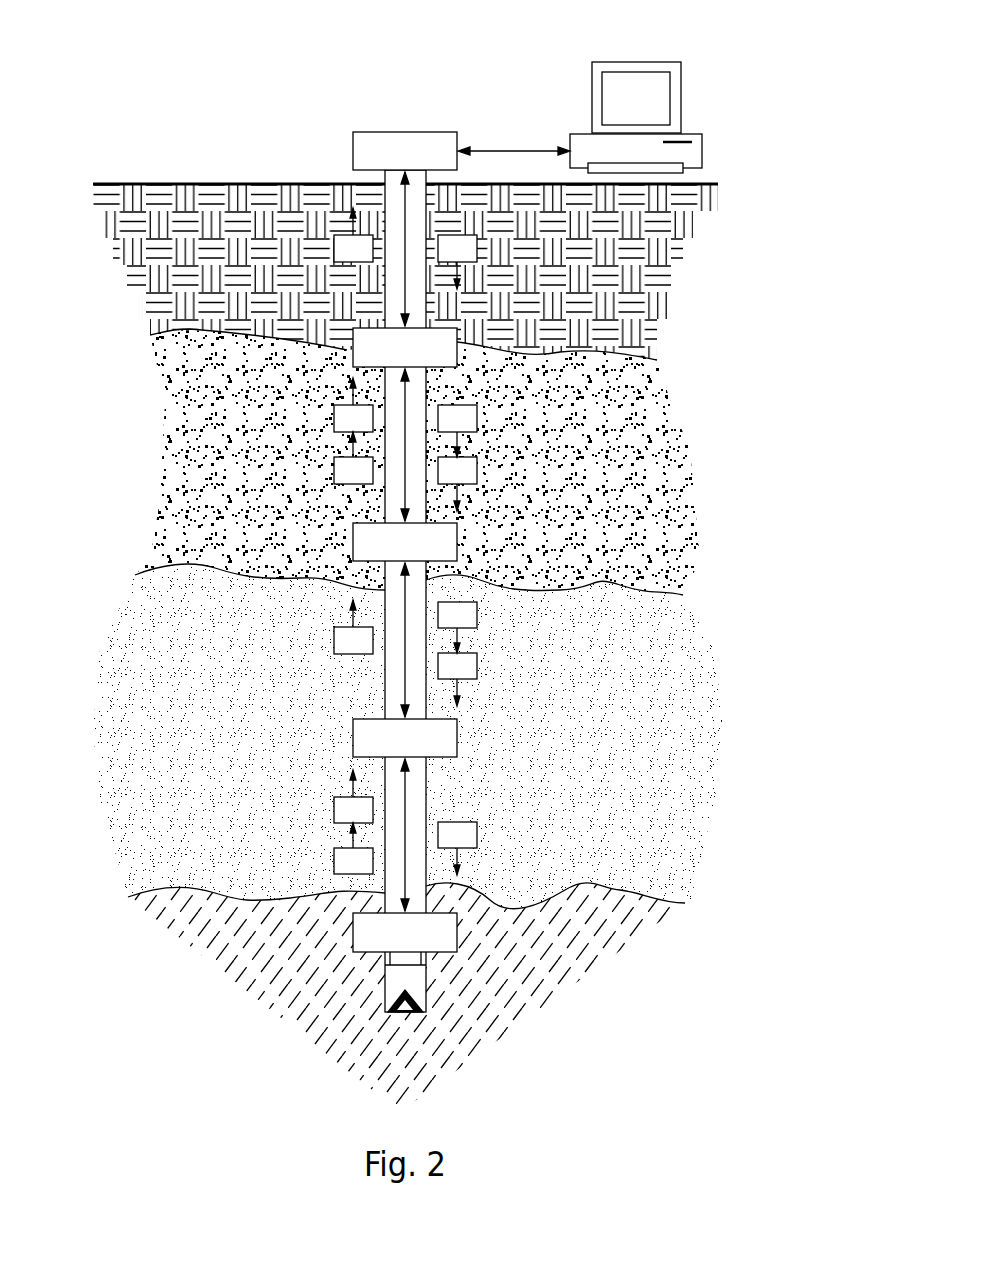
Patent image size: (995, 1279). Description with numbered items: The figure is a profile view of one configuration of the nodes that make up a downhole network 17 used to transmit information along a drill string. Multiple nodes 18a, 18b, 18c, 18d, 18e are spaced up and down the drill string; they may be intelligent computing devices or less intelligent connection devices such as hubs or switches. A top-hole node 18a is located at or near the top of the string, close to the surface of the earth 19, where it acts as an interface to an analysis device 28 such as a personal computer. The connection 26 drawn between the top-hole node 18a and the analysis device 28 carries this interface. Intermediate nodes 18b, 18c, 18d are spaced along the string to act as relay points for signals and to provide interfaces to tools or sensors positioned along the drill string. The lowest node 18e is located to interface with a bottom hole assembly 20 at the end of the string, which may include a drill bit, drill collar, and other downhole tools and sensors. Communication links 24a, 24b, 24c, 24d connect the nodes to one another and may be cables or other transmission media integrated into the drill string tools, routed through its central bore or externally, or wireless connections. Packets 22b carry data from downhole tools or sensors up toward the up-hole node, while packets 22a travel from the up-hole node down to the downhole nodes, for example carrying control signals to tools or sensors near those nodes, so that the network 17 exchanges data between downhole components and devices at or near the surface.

The downhole network 17 is at (268, 82).
The surface of the earth 19 is at (203, 205).
The top-hole node 18a is at (443, 135).
The intermediate node 18b is at (460, 335).
The intermediate node 18c is at (450, 535).
The intermediate node 18d is at (450, 732).
The node 18e is at (450, 928).
The bottom hole assembly 20 is at (464, 1010).
The packets 22a is at (463, 248).
The packets 22b is at (347, 248).
The communication link 24a is at (418, 208).
The communication link 24b is at (407, 403).
The communication link 24c is at (407, 595).
The communication link 24d is at (407, 789).
The communication link 26 is at (510, 148).
The analysis device 28 is at (683, 100).